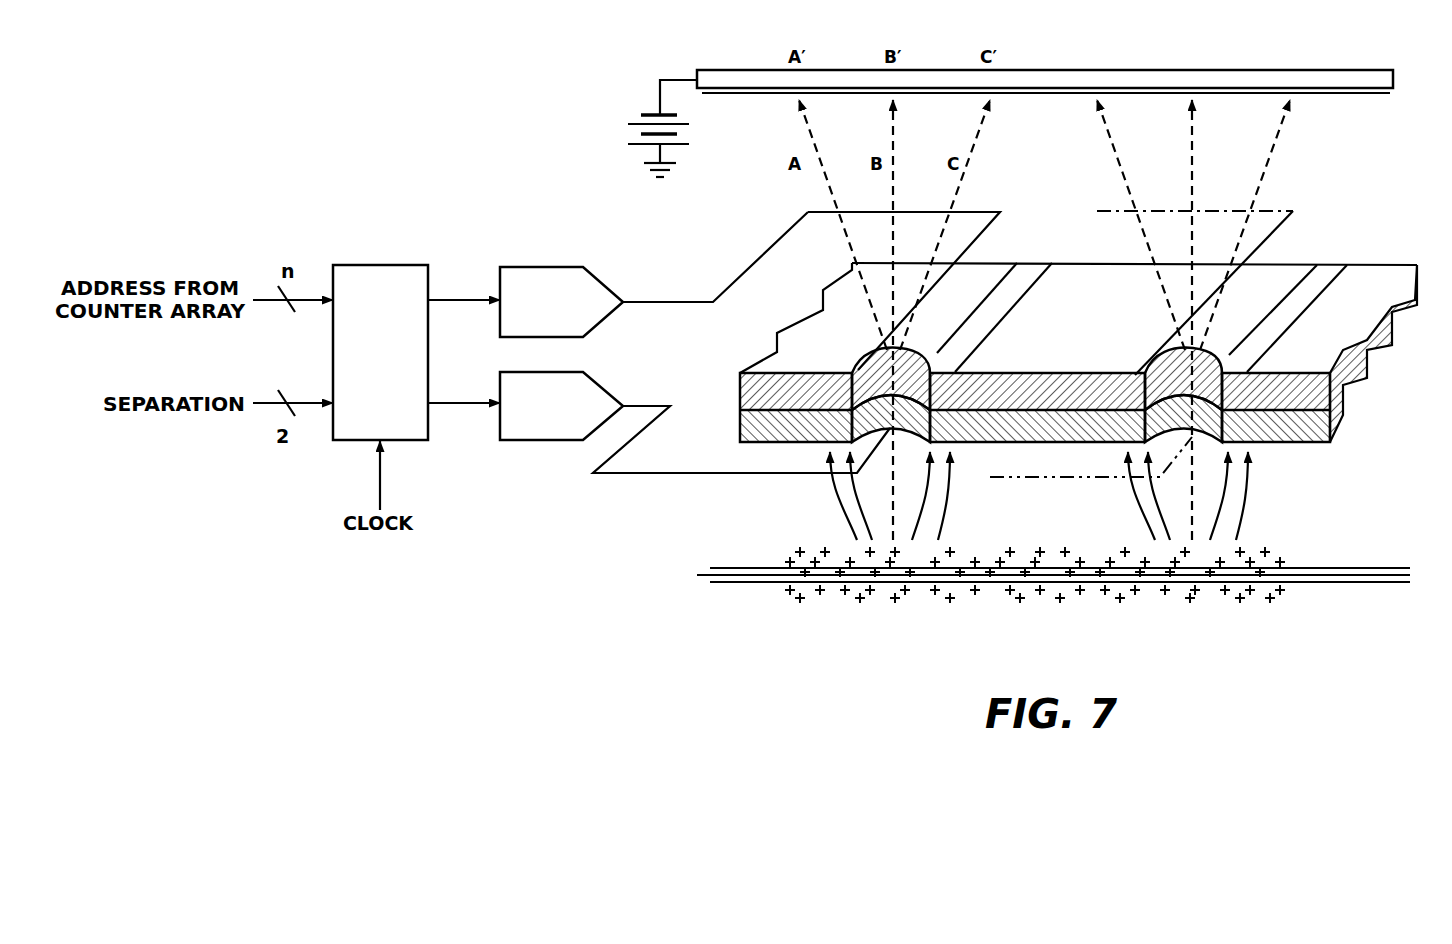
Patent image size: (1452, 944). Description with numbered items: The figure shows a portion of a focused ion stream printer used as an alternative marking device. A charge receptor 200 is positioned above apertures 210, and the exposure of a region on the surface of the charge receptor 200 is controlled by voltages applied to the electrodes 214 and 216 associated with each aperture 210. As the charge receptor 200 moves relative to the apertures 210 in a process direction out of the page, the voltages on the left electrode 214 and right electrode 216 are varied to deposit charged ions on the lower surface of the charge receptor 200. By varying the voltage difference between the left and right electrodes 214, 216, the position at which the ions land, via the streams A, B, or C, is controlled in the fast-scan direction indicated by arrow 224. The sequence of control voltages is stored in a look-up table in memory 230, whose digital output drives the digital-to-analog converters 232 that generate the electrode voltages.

The charge receptor 200 is at (1193, 70).
The aperture 210 is at (868, 366).
The left electrode 214 is at (868, 342).
The right electrode 216 is at (1037, 263).
The arrow 224 is at (695, 243).
The memory 230 is at (381, 265).
The digital-to-analog converter 232 is at (547, 267).